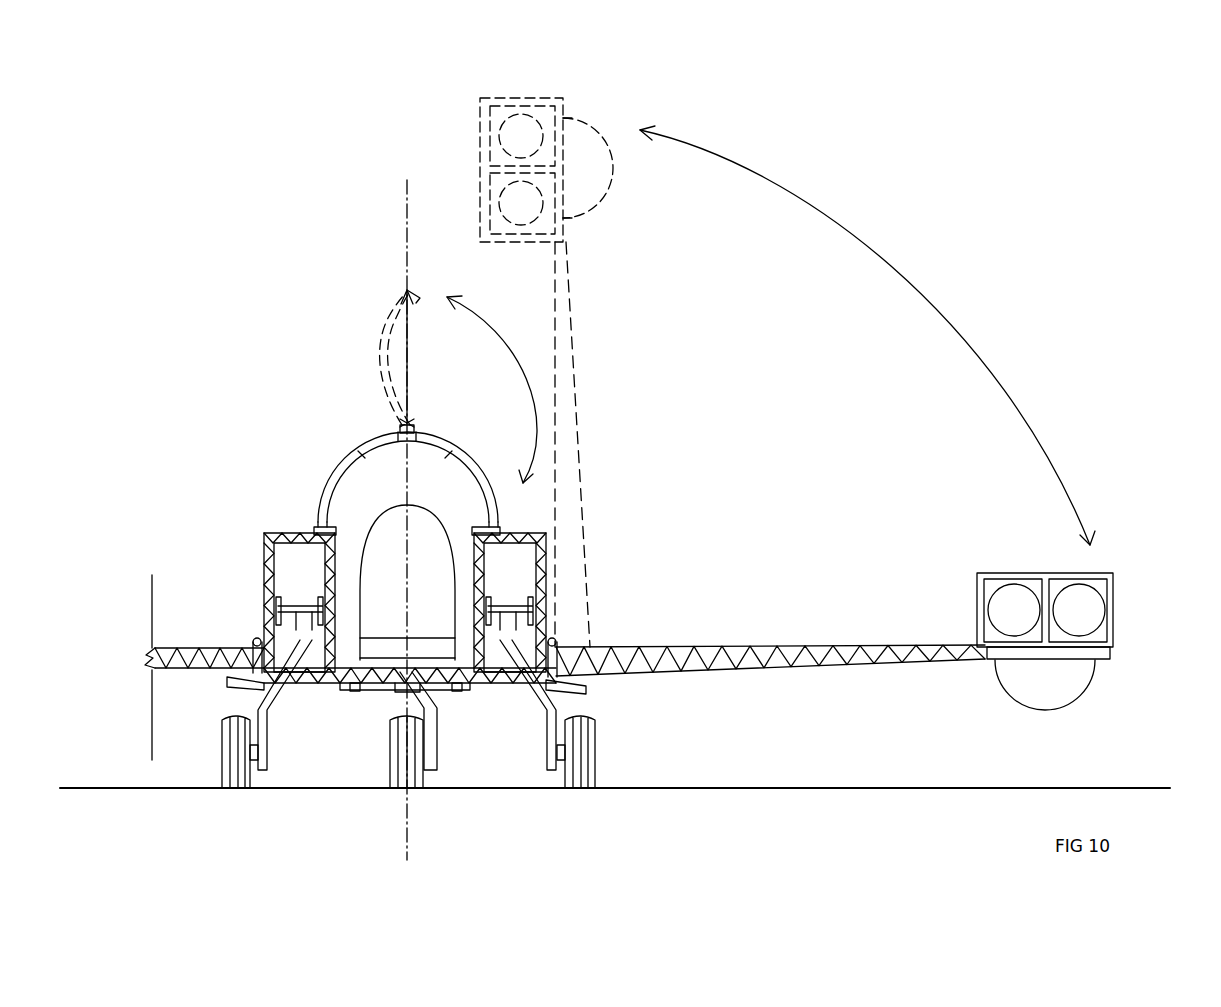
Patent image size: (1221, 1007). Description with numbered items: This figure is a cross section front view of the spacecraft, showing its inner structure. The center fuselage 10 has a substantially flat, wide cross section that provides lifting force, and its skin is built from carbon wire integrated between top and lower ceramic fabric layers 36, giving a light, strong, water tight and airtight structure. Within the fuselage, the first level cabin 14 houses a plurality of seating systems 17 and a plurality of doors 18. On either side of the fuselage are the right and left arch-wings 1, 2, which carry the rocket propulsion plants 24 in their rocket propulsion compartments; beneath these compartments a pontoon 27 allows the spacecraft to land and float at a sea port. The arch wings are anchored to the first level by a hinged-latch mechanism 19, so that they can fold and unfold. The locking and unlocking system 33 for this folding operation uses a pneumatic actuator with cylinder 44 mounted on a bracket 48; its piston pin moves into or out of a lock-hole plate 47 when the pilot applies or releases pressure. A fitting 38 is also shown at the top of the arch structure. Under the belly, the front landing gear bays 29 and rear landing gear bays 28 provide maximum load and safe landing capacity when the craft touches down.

The arch-wing 1 is at (213, 640).
The arch-wing 2 is at (582, 366).
The fuselage 10 is at (297, 543).
The first level cabin 14 is at (355, 507).
The seating system 17 is at (396, 519).
The door 18 is at (384, 333).
The hinged-latch mechanism 19 is at (256, 638).
The rocket propulsion plant 24 is at (522, 108).
The pontoon 27 is at (600, 138).
The rear landing gear bay 28 is at (245, 680).
The front landing gear bay 29 is at (222, 752).
The locking and unlocking system 33 is at (250, 690).
The ceramic fabric layer 36 is at (190, 648).
The fitting 38 is at (405, 424).
The pneumatic actuator with cylinder 44 is at (330, 690).
The lock-hole plate 47 is at (390, 692).
The bracket 48 is at (352, 692).